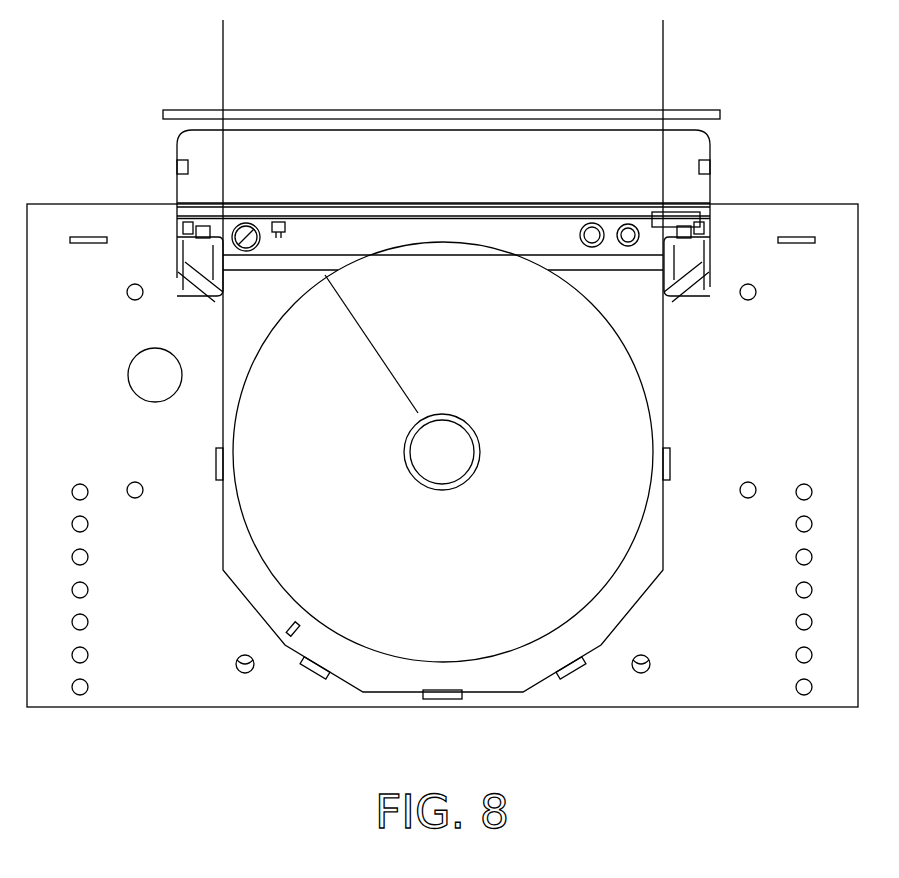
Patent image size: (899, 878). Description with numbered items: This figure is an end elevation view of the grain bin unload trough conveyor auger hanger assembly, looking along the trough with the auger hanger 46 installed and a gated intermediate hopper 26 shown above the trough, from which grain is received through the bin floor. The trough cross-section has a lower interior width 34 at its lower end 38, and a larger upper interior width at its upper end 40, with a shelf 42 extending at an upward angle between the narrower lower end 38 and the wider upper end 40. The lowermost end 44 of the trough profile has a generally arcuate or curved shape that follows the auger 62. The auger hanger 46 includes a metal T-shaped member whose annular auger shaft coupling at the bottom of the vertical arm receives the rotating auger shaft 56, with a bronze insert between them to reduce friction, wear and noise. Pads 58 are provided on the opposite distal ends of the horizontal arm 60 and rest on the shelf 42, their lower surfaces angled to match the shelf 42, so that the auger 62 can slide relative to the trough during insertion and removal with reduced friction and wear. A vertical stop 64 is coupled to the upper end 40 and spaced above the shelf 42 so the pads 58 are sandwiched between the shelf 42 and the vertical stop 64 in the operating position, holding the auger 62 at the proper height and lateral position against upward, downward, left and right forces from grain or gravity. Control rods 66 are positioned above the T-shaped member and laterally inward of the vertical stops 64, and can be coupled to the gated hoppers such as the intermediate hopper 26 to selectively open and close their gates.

The intermediate hopper 26 is at (712, 148).
The lower interior width 34 is at (223, 28).
The lower end 38 is at (222, 440).
The upper end 40 is at (200, 240).
The shelf 42 is at (193, 295).
The lowermost end 44 is at (590, 650).
The auger hanger 46 is at (312, 250).
The auger shaft 56 is at (455, 448).
The pads 58 is at (197, 265).
The horizontal arm 60 is at (643, 262).
The auger 62 is at (298, 630).
The vertical stop 64 is at (203, 220).
The control rods 66 is at (592, 247).